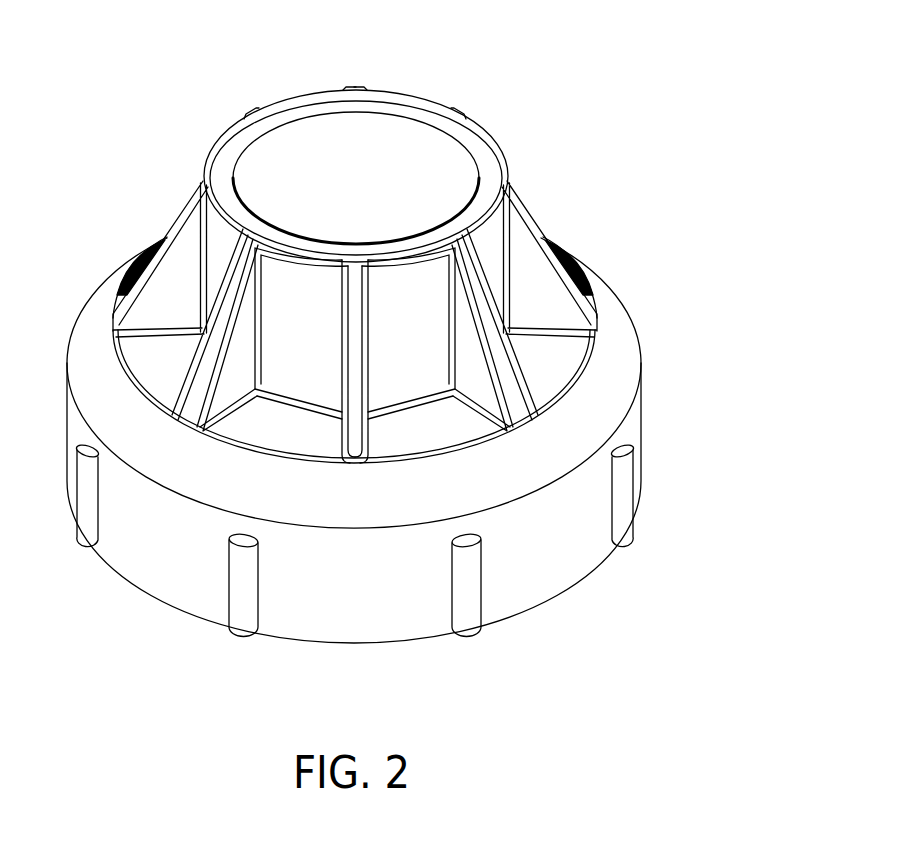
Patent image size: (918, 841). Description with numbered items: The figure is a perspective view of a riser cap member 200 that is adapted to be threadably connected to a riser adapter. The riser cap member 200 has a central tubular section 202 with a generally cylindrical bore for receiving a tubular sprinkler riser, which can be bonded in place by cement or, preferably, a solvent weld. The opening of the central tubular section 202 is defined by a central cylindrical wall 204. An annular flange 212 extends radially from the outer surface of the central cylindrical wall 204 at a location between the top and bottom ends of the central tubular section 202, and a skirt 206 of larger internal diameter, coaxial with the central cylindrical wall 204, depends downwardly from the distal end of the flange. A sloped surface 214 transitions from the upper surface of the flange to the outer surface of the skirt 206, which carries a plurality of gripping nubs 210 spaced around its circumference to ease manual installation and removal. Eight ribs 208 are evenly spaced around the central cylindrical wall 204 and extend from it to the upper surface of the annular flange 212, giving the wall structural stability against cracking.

The riser cap member 200 is at (680, 367).
The central tubular section 202 is at (377, 167).
The central cylindrical wall 204 is at (503, 172).
The skirt 206 is at (542, 548).
The ribs 208 is at (546, 236).
The gripping nubs 210 is at (632, 477).
The annular flange 212 is at (285, 432).
The sloped surface 214 is at (182, 473).